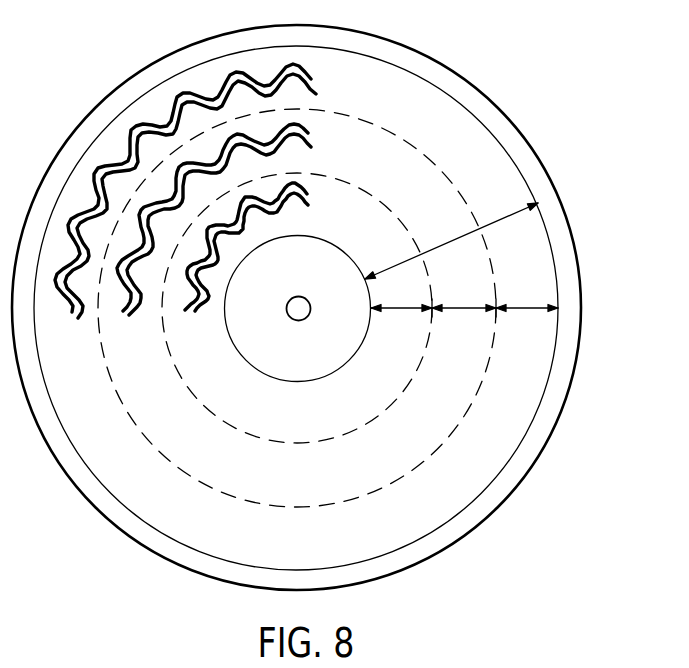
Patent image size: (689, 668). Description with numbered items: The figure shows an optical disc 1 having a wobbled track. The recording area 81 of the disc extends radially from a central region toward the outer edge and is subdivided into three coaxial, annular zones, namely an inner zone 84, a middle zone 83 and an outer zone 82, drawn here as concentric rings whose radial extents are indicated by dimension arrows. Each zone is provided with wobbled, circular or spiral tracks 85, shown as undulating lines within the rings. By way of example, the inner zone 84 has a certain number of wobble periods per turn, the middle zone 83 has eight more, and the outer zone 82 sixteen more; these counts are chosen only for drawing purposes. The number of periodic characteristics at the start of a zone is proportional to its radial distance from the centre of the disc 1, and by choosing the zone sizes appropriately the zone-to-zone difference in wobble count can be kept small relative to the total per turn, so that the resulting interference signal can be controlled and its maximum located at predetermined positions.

The optical disc 1 is at (403, 59).
The recording area 81 is at (451, 241).
The outer zone 82 is at (527, 299).
The middle zone 83 is at (464, 301).
The inner zone 84 is at (401, 301).
The wobbled tracks 85 is at (120, 162).